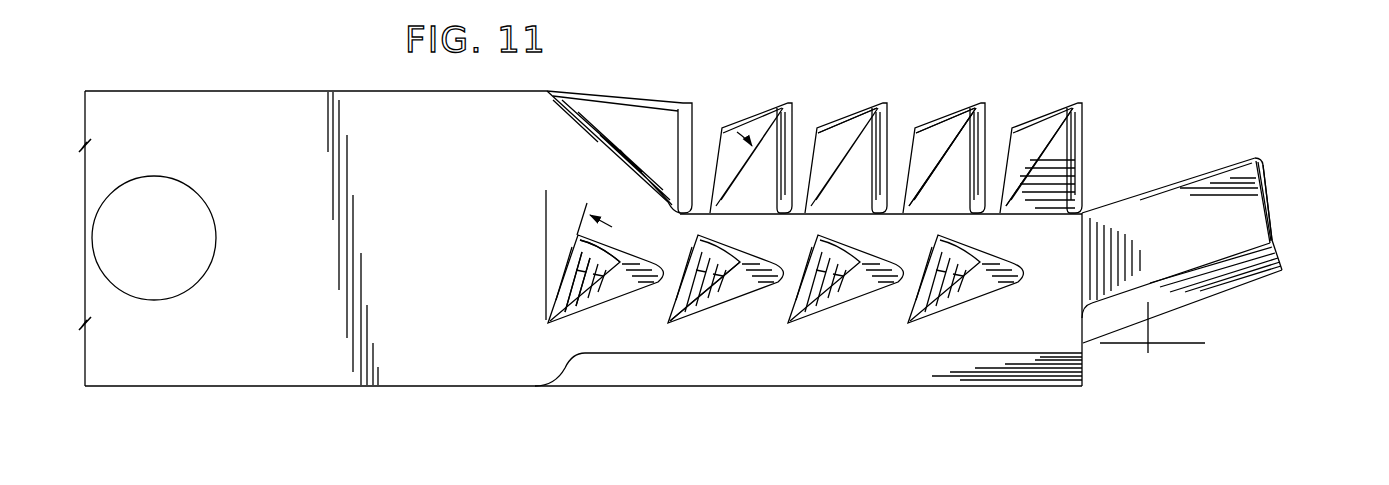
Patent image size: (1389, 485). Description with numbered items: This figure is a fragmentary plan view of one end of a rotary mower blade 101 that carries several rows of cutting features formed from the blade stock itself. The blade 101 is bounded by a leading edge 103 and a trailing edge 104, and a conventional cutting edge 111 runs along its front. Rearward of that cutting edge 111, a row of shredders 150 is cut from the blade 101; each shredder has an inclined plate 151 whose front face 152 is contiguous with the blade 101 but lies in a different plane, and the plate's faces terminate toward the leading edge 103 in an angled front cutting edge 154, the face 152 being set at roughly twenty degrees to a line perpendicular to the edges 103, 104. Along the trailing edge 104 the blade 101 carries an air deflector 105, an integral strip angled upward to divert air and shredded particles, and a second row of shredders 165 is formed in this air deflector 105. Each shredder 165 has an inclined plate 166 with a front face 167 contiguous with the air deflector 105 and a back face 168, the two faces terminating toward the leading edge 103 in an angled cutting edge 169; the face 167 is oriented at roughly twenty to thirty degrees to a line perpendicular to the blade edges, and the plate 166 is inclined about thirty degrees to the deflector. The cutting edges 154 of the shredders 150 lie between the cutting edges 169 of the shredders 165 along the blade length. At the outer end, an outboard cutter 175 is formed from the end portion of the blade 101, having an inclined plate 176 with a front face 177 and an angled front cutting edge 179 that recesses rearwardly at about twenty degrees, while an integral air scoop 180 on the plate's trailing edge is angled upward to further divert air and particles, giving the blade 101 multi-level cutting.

The blade 101 is at (423, 403).
The leading edge 103 is at (505, 388).
The trailing edge 104 is at (362, 90).
The air deflector 105 is at (1070, 150).
The conventional cutting edge 111 is at (722, 378).
The shredders 150 is at (583, 307).
The inclined plate 151 is at (693, 292).
The front face 152 is at (597, 258).
The angled front cutting edge 154 is at (597, 282).
The shredders 165 is at (846, 100).
The inclined plate 166 is at (945, 105).
The front face 167 is at (967, 130).
The back face 168 is at (922, 112).
The angled cutting edge 169 is at (912, 158).
The outboard cutter 175 is at (1283, 215).
The inclined plate 176 is at (1272, 200).
The front face 177 is at (1135, 210).
The angled front cutting edge 179 is at (1152, 343).
The air scoop 180 is at (1233, 170).